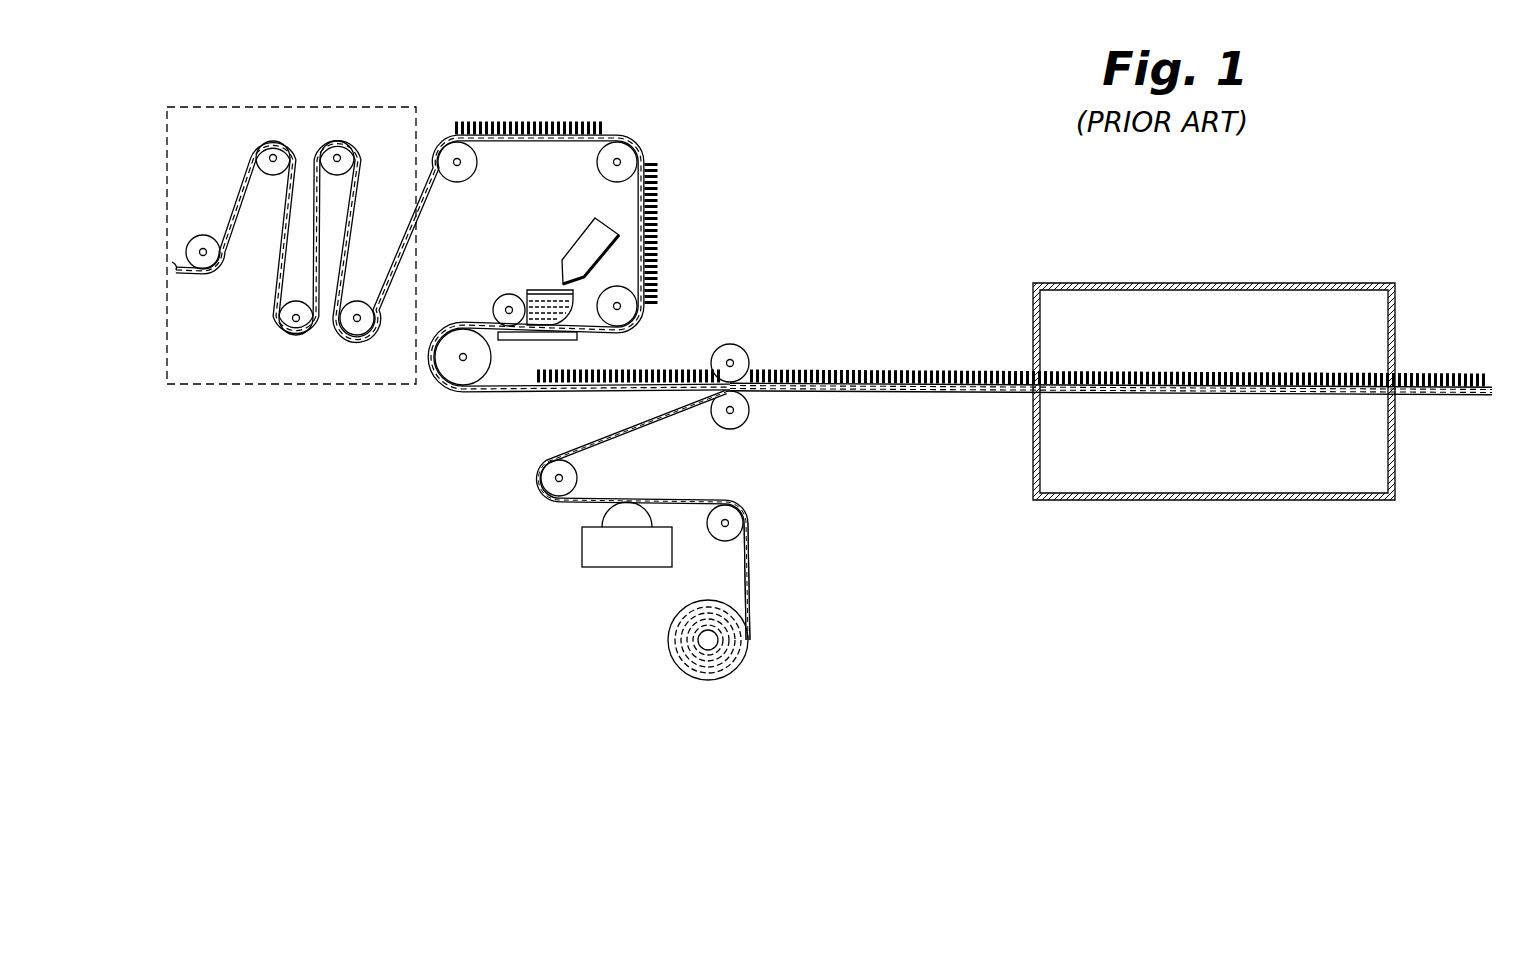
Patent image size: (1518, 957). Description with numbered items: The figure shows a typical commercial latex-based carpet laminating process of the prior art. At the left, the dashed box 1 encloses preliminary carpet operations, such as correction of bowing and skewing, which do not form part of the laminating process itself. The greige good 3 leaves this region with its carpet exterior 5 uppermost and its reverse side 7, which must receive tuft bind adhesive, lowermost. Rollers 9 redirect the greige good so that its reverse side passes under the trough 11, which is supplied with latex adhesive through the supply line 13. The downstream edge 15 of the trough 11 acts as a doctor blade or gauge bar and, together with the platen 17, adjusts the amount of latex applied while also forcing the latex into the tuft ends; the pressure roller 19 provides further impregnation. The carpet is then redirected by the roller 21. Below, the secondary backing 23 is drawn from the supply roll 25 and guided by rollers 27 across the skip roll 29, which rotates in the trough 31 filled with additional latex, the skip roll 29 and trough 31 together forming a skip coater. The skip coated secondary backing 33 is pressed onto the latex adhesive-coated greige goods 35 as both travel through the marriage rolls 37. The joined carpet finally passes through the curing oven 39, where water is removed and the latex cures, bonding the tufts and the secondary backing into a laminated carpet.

The dashed box 1 is at (371, 101).
The greige good 3 is at (533, 120).
The carpet exterior 5 is at (605, 120).
The reverse side 7 is at (533, 147).
The rollers 9 is at (655, 165).
The trough 11 is at (555, 340).
The supply line 13 is at (620, 237).
The downstream edge 15 is at (530, 327).
The platen 17 is at (497, 368).
The pressure roller 19 is at (508, 293).
The roller 21 is at (450, 375).
The secondary backing 23 is at (750, 575).
The supply roll 25 is at (750, 640).
The rollers 27 is at (560, 507).
The skip roll 29 is at (625, 503).
The trough 31 is at (597, 570).
The skip coated secondary backing 33 is at (635, 428).
The latex adhesive-coated greige goods 35 is at (630, 392).
The marriage rolls 37 is at (800, 453).
The curing oven 39 is at (1239, 470).